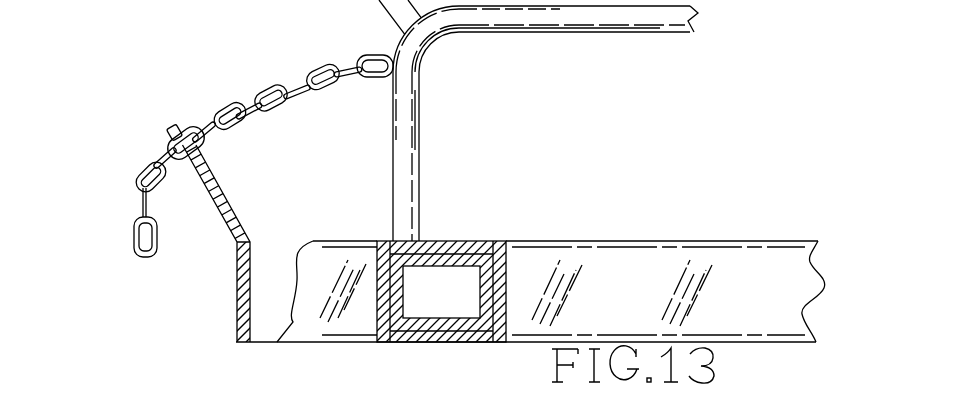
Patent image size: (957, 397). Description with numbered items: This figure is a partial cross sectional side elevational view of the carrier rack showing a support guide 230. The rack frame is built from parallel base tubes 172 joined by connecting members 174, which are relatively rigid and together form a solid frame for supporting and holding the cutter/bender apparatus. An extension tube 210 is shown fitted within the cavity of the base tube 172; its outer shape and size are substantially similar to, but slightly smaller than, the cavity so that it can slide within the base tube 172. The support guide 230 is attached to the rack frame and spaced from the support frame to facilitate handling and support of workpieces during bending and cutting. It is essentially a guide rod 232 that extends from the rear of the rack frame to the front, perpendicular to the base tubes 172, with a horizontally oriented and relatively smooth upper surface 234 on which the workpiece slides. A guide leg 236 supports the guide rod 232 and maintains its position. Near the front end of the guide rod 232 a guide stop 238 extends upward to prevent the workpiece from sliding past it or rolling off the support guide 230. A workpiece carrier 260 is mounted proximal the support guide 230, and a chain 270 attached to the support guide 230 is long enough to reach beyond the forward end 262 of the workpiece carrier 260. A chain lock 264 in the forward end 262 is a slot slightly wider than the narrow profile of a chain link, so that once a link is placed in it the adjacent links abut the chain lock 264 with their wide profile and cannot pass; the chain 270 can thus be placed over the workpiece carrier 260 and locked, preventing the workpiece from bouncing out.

The base tube 172 is at (437, 241).
The connecting member 174 is at (617, 252).
The extension tube 210 is at (466, 262).
The support guide 230 is at (481, 24).
The guide rod 232 is at (665, 22).
The upper surface 234 is at (560, 22).
The guide leg 236 is at (413, 98).
The guide stop 238 is at (356, 0).
The workpiece carrier 260 is at (224, 222).
The forward end 262 is at (173, 127).
The chain lock 264 is at (167, 133).
The chain 270 is at (315, 72).